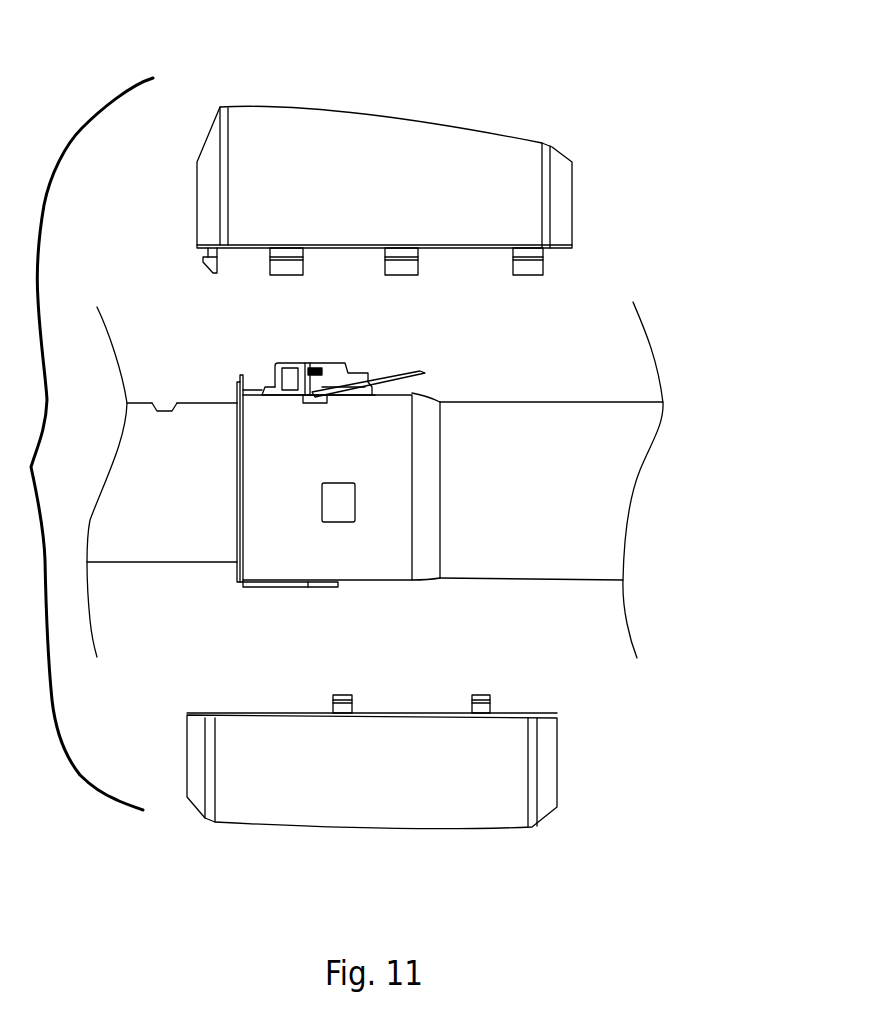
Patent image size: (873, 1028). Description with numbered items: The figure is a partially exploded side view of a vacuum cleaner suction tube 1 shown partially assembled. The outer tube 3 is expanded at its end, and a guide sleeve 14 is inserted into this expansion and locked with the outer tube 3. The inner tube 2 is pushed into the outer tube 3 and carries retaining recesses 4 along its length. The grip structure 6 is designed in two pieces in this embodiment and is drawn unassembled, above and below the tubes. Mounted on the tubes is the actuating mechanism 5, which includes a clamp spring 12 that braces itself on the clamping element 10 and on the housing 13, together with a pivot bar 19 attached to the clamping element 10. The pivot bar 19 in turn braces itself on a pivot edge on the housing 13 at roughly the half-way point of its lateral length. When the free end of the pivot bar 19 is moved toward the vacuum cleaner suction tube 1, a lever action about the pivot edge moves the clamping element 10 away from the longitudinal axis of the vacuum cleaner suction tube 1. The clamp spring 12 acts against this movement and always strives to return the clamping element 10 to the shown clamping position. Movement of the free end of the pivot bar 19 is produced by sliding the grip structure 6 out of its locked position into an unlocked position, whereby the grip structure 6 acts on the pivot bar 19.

The vacuum cleaner suction tube 1 is at (630, 233).
The inner tube 2 is at (145, 543).
The outer tube 3 is at (533, 567).
The retaining recesses 4 is at (166, 410).
The actuating mechanism 5 is at (207, 297).
The grip structure 6 is at (435, 133).
The clamping element 10 is at (320, 403).
The clamp spring 12 is at (321, 368).
The housing 13 is at (345, 362).
The guide sleeve 14 is at (227, 542).
The pivot bar 19 is at (424, 372).